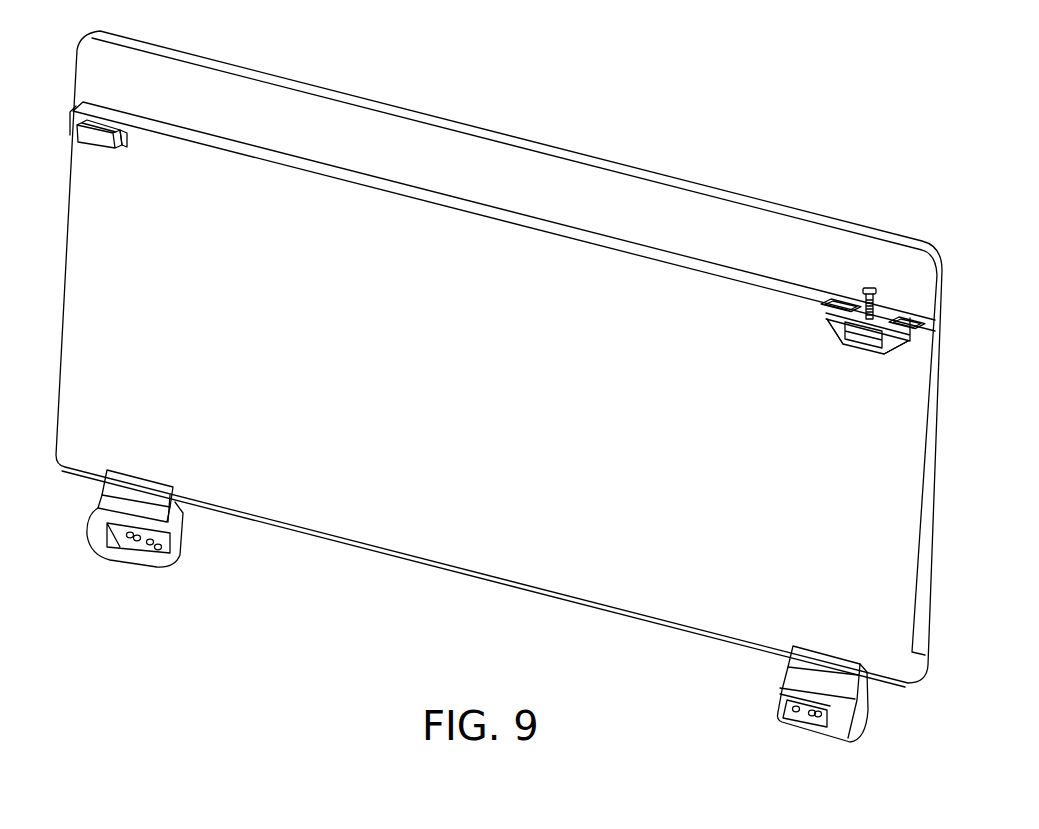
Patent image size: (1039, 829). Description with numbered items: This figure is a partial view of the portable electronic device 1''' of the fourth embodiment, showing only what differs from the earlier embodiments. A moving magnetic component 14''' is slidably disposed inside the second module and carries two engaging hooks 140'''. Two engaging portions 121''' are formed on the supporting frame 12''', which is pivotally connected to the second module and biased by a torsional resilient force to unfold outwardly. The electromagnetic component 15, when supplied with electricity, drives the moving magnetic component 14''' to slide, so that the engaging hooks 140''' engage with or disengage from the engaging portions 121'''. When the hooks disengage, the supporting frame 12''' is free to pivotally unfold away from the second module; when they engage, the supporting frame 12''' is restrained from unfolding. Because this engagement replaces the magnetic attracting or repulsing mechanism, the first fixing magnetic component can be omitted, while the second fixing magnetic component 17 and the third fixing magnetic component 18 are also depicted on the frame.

The portable electronic device 1''' is at (522, 386).
The supporting frame 12''' is at (504, 216).
The engaging portion 121''' is at (909, 252).
The electromagnetic component 15 is at (875, 285).
The engaging hook 140''' is at (896, 347).
The moving magnetic component 14''' is at (898, 286).
The second fixing magnetic component 17 is at (97, 140).
The third fixing magnetic component 18 is at (127, 143).